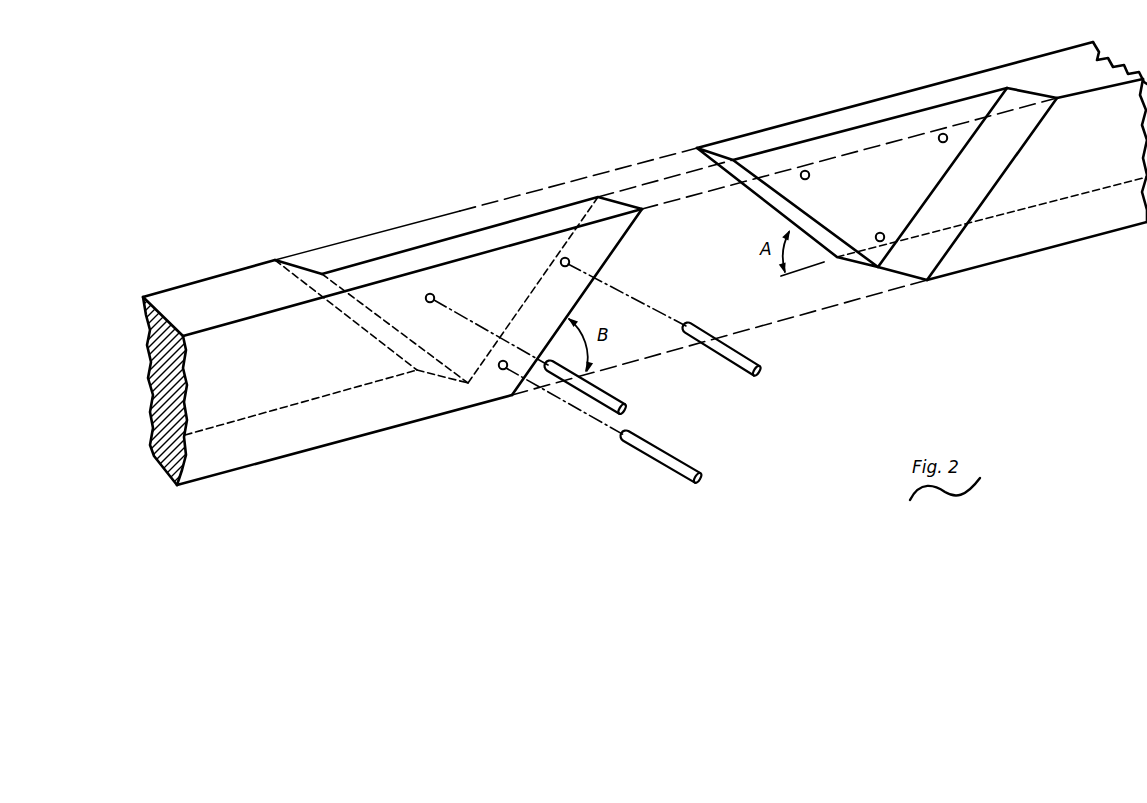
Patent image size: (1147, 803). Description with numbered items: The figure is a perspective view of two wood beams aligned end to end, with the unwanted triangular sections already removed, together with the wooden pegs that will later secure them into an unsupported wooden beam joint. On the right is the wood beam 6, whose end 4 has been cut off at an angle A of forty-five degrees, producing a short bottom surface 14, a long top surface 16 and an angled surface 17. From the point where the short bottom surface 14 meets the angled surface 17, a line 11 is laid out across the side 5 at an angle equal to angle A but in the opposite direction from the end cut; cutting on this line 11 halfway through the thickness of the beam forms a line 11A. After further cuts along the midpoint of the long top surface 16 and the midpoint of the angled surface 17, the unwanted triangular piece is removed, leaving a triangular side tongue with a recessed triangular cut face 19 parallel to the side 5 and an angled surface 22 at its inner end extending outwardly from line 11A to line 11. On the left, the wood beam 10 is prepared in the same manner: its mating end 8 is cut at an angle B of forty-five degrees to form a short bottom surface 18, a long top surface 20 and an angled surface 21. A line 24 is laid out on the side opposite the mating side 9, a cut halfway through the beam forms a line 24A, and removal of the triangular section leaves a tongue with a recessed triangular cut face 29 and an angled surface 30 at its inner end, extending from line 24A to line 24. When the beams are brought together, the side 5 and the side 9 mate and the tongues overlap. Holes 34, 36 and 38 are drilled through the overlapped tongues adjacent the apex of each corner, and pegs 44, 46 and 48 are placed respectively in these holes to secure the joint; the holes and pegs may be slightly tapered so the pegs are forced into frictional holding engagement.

The end 4 is at (990, 253).
The mating side 5 is at (1101, 176).
The wood beam 6 is at (954, 76).
The mating end 8 is at (410, 404).
The mating side 9 is at (260, 384).
The wood beam 10 is at (204, 279).
The line 11 is at (995, 187).
The line 11A is at (967, 138).
The short bottom surface 14 is at (1093, 241).
The long top surface 16 is at (807, 123).
The angled surface 17 is at (778, 193).
The short bottom surface 18 is at (325, 447).
The recessed triangular cut face 19 is at (878, 186).
The long top surface 20 is at (377, 268).
The angled surface 21 is at (571, 263).
The angled surface 22 is at (1009, 130).
The line 24 is at (340, 299).
The line 24A is at (376, 310).
The recessed triangular cut face 29 is at (443, 252).
The angled surface 30 is at (344, 298).
The hole 34 is at (427, 303).
The hole 36 is at (560, 263).
The hole 38 is at (503, 371).
The peg 44 is at (603, 399).
The peg 46 is at (731, 356).
The peg 48 is at (692, 459).